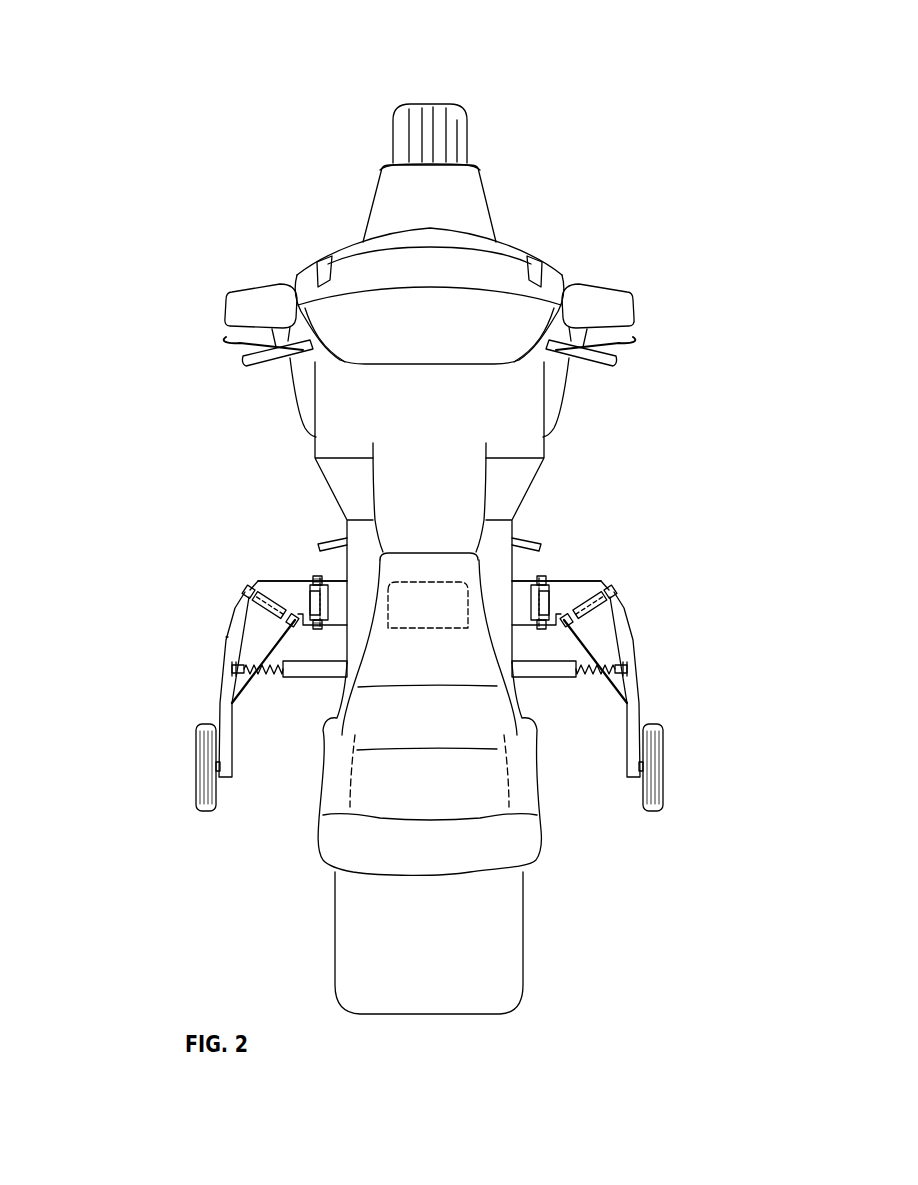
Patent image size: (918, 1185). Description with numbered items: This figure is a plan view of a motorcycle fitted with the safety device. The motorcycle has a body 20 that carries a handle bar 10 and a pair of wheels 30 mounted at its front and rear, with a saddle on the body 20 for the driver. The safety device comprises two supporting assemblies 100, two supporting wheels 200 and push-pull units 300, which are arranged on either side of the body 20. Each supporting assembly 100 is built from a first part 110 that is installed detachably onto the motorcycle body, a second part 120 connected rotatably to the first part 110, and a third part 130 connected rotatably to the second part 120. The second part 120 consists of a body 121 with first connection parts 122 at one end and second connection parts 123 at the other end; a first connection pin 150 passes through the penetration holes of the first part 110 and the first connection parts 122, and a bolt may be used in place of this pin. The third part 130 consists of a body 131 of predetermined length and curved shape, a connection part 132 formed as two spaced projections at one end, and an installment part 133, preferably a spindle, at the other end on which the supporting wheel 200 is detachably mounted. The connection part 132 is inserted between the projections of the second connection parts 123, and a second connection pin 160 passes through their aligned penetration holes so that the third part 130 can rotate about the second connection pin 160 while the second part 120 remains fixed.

The handle bar 10 is at (634, 357).
The body 20 is at (556, 845).
The wheels 30 is at (463, 99).
The supporting assembly 100 is at (760, 476).
The first part 110 is at (525, 573).
The second part 120 is at (595, 572).
The body 121 is at (306, 582).
The first connection parts 122 is at (323, 624).
The second connection parts 123 is at (290, 623).
The third part 130 is at (646, 633).
The body 131 is at (237, 649).
The connection part 132 is at (293, 616).
The installment part 133 is at (231, 779).
The first connection pin 150 is at (298, 583).
The second connection pin 160 is at (228, 637).
The supporting wheel 200 is at (184, 783).
The push-pull unit 300 is at (300, 684).